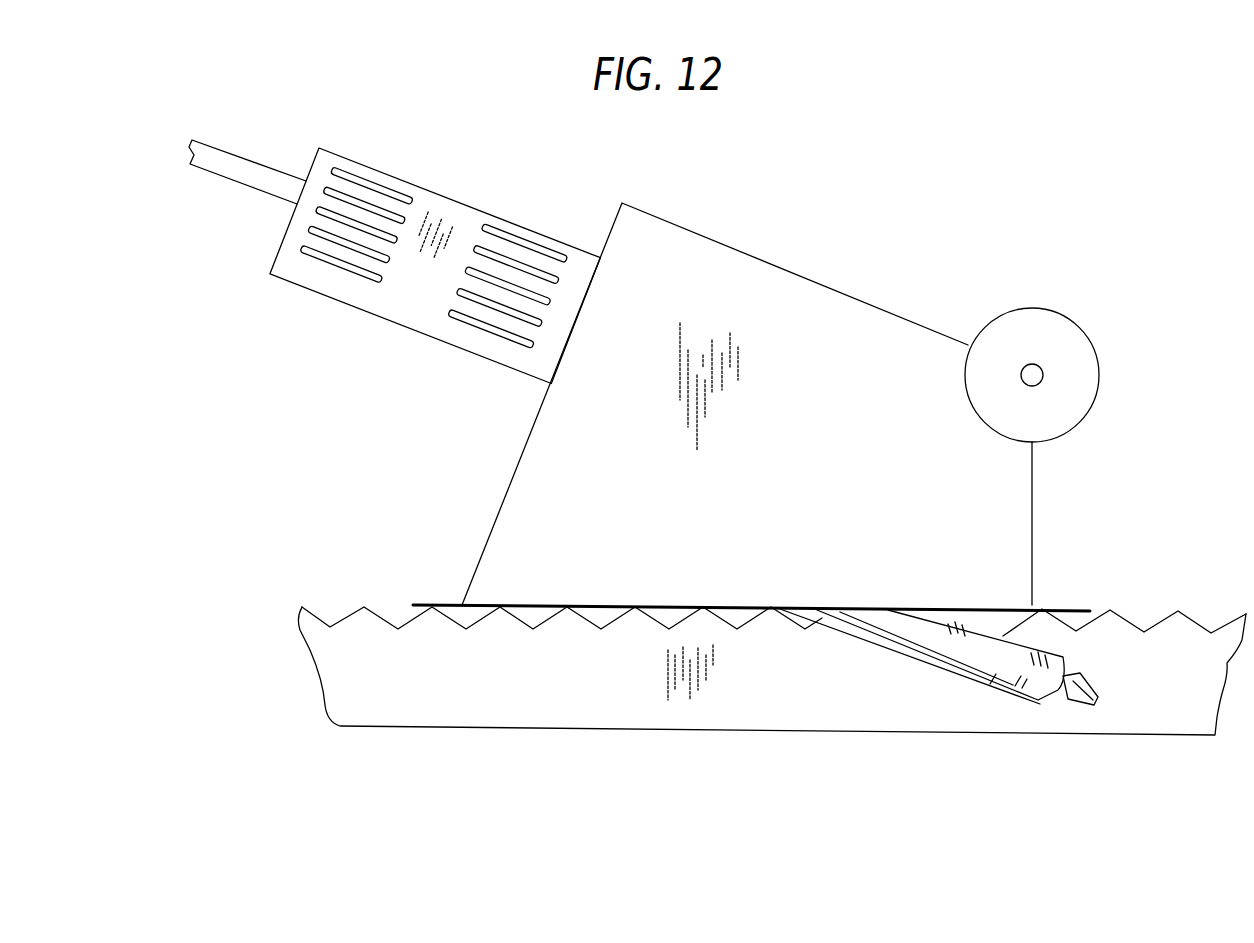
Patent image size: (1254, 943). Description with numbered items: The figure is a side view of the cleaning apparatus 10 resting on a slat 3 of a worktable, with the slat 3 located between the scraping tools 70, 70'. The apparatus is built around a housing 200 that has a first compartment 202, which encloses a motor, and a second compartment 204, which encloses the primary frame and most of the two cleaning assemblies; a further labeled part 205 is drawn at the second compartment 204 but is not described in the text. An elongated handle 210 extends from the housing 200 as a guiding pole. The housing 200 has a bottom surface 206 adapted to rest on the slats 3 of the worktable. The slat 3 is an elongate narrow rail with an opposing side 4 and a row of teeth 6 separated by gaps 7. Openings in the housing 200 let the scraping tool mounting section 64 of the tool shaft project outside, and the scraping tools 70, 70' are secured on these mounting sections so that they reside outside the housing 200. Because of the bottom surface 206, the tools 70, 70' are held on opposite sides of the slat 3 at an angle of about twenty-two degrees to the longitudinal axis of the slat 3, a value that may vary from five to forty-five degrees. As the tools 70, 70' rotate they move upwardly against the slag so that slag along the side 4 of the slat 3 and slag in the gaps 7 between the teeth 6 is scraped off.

The cleaning apparatus 10 is at (860, 257).
The housing 200 is at (736, 208).
The first compartment 202 is at (463, 223).
The second compartment 204 is at (902, 377).
The wheel hub 205 is at (1083, 422).
The bottom surface 206 is at (453, 605).
The elongated handle 210 is at (271, 168).
The slat 3 is at (537, 745).
The opposing side 4 is at (633, 703).
The teeth 6 is at (362, 608).
The gaps 7 is at (397, 628).
The scraping tool 70 is at (940, 703).
The scraping tool 70' is at (910, 695).
The scraping tool mounting section 64 is at (1093, 700).